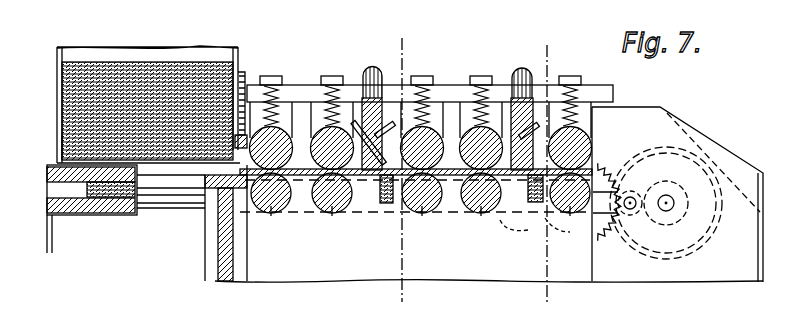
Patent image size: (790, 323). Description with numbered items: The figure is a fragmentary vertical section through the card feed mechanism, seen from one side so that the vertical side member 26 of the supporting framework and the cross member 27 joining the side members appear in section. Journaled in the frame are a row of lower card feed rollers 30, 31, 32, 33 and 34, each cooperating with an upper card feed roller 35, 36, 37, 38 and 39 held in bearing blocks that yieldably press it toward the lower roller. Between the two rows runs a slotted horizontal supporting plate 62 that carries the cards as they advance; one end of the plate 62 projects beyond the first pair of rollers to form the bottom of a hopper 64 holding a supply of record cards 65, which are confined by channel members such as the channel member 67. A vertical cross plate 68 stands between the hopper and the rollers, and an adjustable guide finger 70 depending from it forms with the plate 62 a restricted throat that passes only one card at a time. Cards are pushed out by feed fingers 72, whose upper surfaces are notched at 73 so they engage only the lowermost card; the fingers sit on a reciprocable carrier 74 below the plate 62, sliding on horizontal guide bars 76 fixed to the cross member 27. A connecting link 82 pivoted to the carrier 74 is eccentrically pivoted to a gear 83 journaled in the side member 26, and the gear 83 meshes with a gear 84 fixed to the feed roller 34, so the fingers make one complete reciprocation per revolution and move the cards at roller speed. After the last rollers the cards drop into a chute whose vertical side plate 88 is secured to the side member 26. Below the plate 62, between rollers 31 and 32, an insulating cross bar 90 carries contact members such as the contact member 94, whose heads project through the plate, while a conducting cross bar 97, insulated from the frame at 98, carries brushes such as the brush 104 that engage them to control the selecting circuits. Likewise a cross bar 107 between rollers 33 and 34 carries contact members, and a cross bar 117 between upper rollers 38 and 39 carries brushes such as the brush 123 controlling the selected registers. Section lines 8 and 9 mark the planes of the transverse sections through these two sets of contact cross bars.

The vertical side member 26 is at (480, 278).
The cross member 27 is at (225, 266).
The lower card feed roller 30 is at (273, 215).
The lower card feed roller 31 is at (335, 205).
The lower card feed roller 32 is at (425, 205).
The lower card feed roller 33 is at (485, 208).
The lower card feed roller 34 is at (572, 210).
The upper card feed roller 35 is at (282, 140).
The upper card feed roller 36 is at (312, 110).
The upper card feed roller 37 is at (437, 135).
The upper card feed roller 38 is at (490, 140).
The upper card feed roller 39 is at (590, 135).
The horizontal supporting plate 62 is at (365, 180).
The hopper 64 is at (56, 92).
The record cards 65 is at (128, 68).
The channel member 67 is at (205, 47).
The vertical cross plate 68 is at (262, 82).
The adjustable guide finger 70 is at (230, 178).
The feed finger 72 is at (50, 180).
The notch 73 is at (62, 145).
The reciprocable carrier 74 is at (93, 212).
The horizontal guide bar 76 is at (148, 205).
The connecting link 82 is at (455, 215).
The gear 83 is at (690, 257).
The gear 84 is at (607, 268).
The vertical side plate 88 is at (722, 158).
The cross bar 90 is at (398, 236).
The electrical contact member 94 is at (395, 200).
The cross bar 97 is at (372, 137).
The insulation 98 is at (444, 318).
The electrical contact brush 104 is at (383, 157).
The cross bar 107 is at (533, 200).
The cross bar 117 is at (545, 160).
The electrical contact brush 123 is at (578, 148).
The section line 8- 8 is at (418, 62).
The section line 9- 9 is at (566, 64).